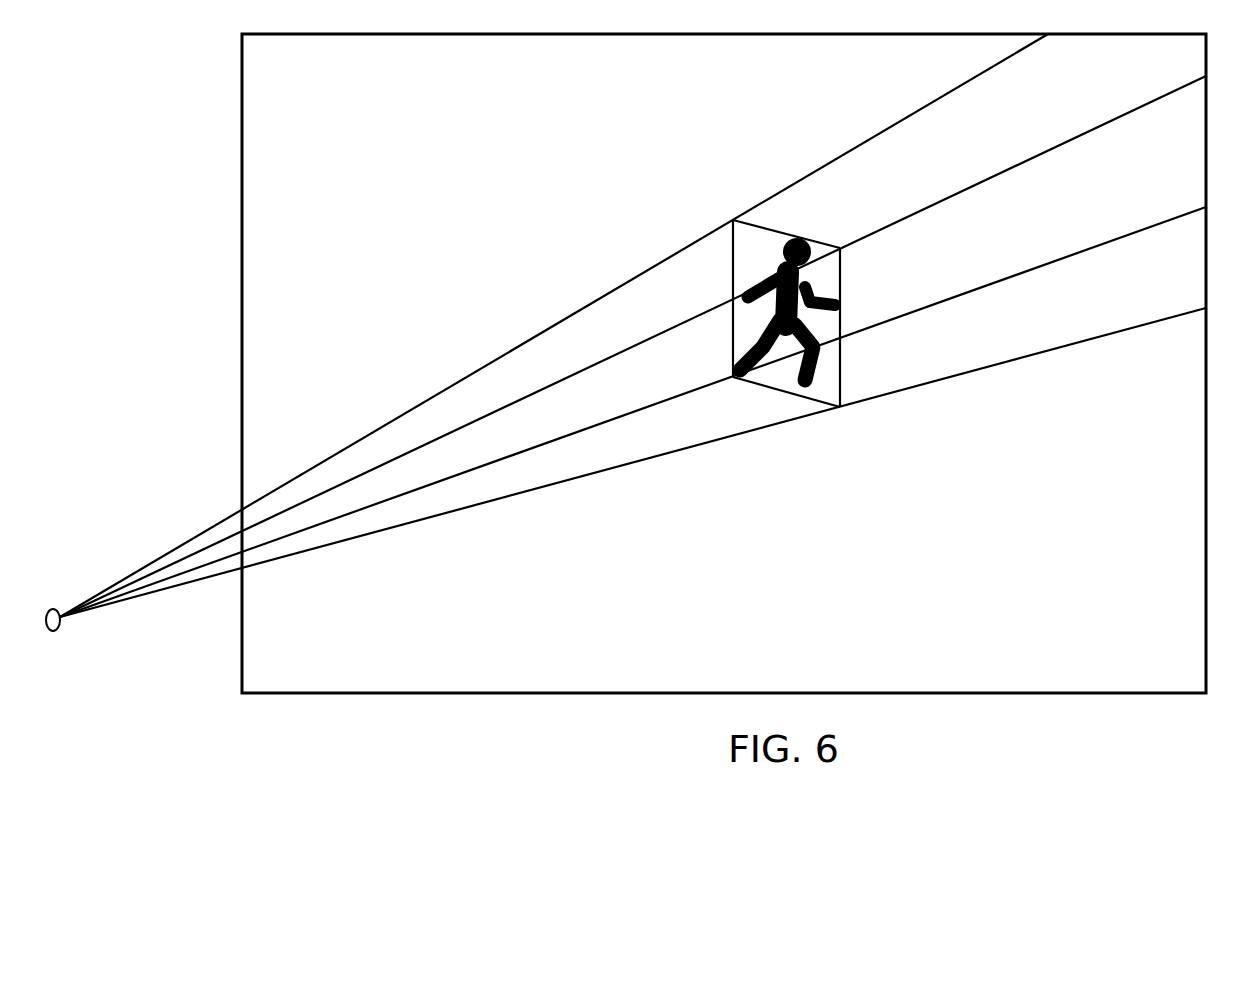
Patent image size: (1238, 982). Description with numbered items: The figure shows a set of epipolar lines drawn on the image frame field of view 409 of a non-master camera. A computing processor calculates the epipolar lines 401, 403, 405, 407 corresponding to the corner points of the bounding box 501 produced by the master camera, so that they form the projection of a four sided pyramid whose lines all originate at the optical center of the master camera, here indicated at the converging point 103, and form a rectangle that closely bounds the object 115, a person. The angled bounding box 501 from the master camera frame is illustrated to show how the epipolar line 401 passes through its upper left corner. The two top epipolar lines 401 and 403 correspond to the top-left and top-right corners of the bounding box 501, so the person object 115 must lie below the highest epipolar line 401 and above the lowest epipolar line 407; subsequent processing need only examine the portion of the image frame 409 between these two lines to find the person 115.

The sensor 103 is at (56, 625).
The epipolar line 401 is at (497, 358).
The epipolar line 403 is at (660, 335).
The epipolar line 405 is at (642, 412).
The epipolar line 407 is at (665, 455).
The image frame field of view 409 is at (257, 232).
The object 115 is at (810, 293).
The bounding box 501 is at (798, 252).